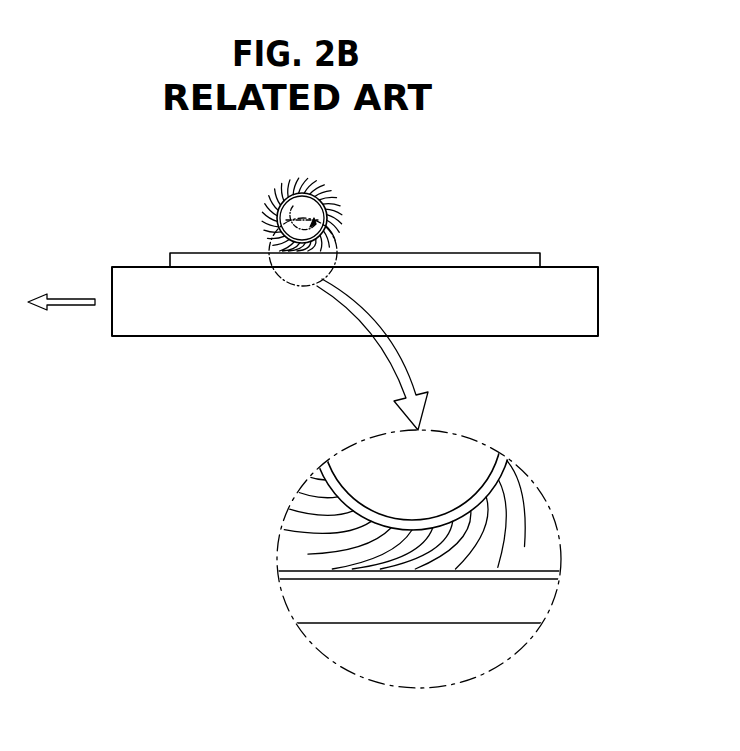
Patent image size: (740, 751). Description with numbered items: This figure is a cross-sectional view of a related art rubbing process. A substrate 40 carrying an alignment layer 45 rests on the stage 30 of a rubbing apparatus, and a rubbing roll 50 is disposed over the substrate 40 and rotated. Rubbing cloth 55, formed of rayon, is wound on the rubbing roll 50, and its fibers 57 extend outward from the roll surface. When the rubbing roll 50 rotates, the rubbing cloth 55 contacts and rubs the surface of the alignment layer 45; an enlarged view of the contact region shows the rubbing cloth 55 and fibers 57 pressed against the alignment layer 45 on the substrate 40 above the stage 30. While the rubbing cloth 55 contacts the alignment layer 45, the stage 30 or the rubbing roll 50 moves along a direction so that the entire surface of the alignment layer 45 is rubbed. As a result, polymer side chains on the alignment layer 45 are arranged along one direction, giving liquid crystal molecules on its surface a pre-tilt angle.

The stage 30 is at (590, 300).
The substrate 40 is at (496, 262).
The alignment layer 45 is at (557, 577).
The rubbing roll 50 is at (305, 203).
The rubbing cloth 55 is at (328, 199).
The bristles 57 is at (341, 213).